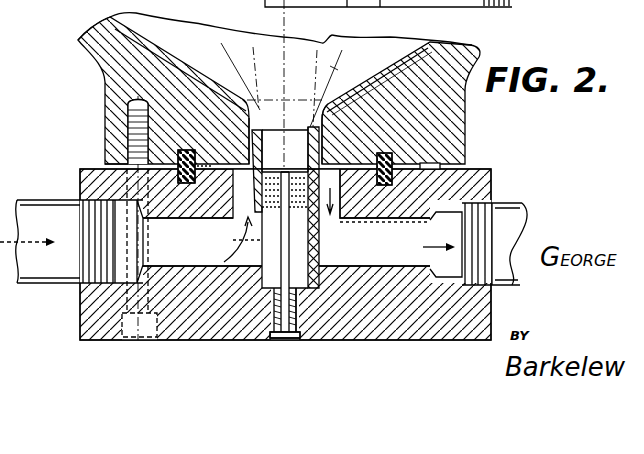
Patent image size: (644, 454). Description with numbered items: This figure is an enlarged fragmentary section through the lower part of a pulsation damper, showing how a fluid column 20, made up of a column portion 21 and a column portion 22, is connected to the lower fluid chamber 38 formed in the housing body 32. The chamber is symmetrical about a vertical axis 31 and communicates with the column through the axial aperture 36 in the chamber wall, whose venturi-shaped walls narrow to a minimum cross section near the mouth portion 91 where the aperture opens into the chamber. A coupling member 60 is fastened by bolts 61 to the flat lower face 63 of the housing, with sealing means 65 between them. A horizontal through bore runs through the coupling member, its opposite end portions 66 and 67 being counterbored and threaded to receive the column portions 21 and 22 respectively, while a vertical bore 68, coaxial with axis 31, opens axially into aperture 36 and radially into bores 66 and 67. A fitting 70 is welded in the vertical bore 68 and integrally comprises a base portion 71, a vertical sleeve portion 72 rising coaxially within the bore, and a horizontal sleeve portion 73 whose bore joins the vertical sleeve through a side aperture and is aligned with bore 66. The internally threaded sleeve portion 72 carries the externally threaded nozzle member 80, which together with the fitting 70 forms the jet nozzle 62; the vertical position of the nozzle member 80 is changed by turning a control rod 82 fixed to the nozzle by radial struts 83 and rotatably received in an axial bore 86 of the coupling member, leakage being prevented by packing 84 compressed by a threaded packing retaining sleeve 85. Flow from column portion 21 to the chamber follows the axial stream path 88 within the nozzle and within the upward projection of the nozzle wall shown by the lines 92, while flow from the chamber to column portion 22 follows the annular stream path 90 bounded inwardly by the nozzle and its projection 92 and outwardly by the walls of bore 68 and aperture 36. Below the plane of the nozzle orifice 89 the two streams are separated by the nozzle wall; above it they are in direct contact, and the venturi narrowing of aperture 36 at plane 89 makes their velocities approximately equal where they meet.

The fluid column 20 is at (68, 195).
The column portion 21 is at (27, 200).
The column portion 22 is at (513, 203).
The axis 31 is at (288, 22).
The housing body 32 is at (482, 52).
The axial aperture 36 is at (328, 100).
The lower fluid chamber 38 is at (396, 58).
The coupling member 60 is at (452, 345).
The bolts 61 is at (124, 300).
The jet nozzle 62 is at (291, 127).
The flat lower face 63 is at (108, 164).
The sealing means 65 is at (403, 163).
The end portion of bore 66 is at (236, 280).
The end portion of bore 67 is at (390, 270).
The vertical bore 68 is at (243, 158).
The fitting 70 is at (220, 238).
The base portion 71 is at (336, 280).
The vertical sleeve portion 72 is at (240, 184).
The horizontal sleeve portion 73 is at (237, 206).
The nozzle member 80 is at (330, 136).
The control rod 82 is at (293, 258).
The radial struts 83 is at (286, 172).
The packing 84 is at (272, 300).
The packing retaining sleeve 85 is at (268, 335).
The axial bore 86 is at (294, 300).
The axial stream path 88 is at (315, 62).
The plane of nozzle orifice 89 is at (350, 127).
The annular stream path 90 is at (252, 69).
The mouth portion 91 is at (284, 89).
The lines representing upward projection of nozzle wall 92 is at (250, 44).